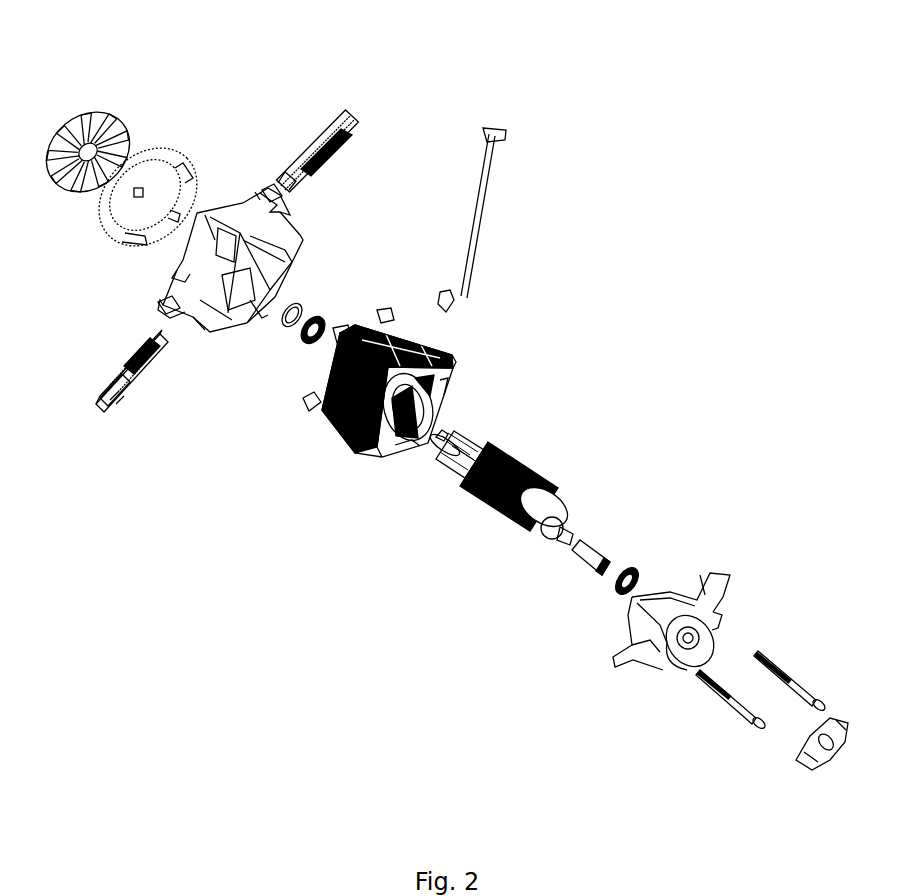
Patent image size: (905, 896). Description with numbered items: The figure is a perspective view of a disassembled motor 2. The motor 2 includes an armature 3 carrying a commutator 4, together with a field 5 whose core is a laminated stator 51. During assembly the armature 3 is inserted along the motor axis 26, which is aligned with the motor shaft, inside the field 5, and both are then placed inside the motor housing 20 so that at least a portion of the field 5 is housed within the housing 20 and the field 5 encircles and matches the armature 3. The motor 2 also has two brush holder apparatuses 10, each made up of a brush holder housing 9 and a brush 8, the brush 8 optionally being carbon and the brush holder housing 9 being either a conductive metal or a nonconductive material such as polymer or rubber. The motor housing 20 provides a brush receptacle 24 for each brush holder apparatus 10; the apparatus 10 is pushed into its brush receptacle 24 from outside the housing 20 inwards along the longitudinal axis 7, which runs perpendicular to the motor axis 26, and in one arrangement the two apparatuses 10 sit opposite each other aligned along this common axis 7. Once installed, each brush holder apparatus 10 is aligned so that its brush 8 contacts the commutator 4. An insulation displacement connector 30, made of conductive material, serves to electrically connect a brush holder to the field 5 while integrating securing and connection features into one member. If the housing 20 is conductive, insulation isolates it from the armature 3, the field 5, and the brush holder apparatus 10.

The motor 2 is at (607, 82).
The armature 3 is at (496, 512).
The commutator 4 is at (481, 446).
The field 5 is at (351, 478).
The common axis 7 is at (359, 108).
The brush 8 is at (150, 341).
The brush holder housing 9 is at (100, 400).
The brush holder apparatus 10 is at (310, 131).
The motor housing 20 is at (242, 215).
The brush receptacle 24 is at (270, 186).
The motor axis 26 is at (791, 704).
The insulation displacement connector 30 is at (386, 314).
The laminated stator 51 is at (345, 440).